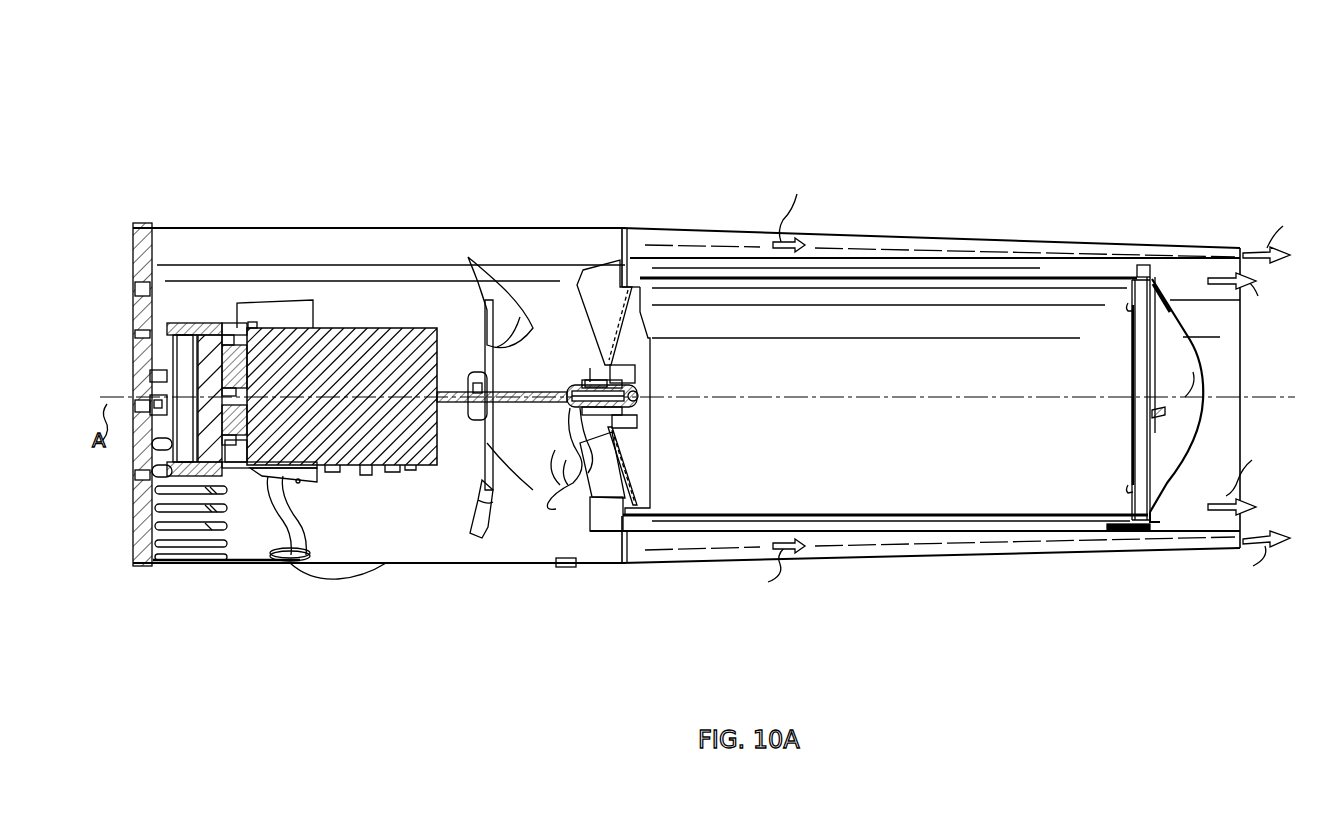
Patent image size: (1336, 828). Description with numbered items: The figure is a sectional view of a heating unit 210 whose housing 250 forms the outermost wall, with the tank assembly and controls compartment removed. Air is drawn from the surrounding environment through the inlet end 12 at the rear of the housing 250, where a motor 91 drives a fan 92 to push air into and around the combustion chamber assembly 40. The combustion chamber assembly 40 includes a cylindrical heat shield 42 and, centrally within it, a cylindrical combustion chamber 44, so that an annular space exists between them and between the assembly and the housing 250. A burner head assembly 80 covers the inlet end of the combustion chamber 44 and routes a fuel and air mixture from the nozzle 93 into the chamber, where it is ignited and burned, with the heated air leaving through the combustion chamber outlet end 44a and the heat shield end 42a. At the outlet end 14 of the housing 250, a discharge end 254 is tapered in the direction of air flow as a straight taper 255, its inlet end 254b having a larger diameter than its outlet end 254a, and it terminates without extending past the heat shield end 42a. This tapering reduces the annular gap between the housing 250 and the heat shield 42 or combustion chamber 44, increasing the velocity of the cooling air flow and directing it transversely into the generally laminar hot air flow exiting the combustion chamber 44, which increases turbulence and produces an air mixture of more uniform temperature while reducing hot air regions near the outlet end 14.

The unit 210 is at (300, 84).
The inlet end 12 is at (124, 302).
The outlet end 14 is at (1287, 308).
The housing 250 is at (416, 568).
The motor 91 is at (352, 330).
The fan 92 is at (497, 350).
The burner head assembly 80 is at (600, 282).
The nozzle 93 is at (590, 384).
The discharge end 254 is at (1242, 150).
The outlet end 254a is at (1240, 240).
The inlet end 254b is at (624, 260).
The straight taper 255 is at (886, 244).
The combustion chamber assembly 40 is at (998, 246).
The combustion chamber 44 is at (1078, 300).
The combustion chamber outlet end 44a is at (1110, 502).
The heat shield 42 is at (1184, 284).
The heat shield end 42a is at (1189, 520).